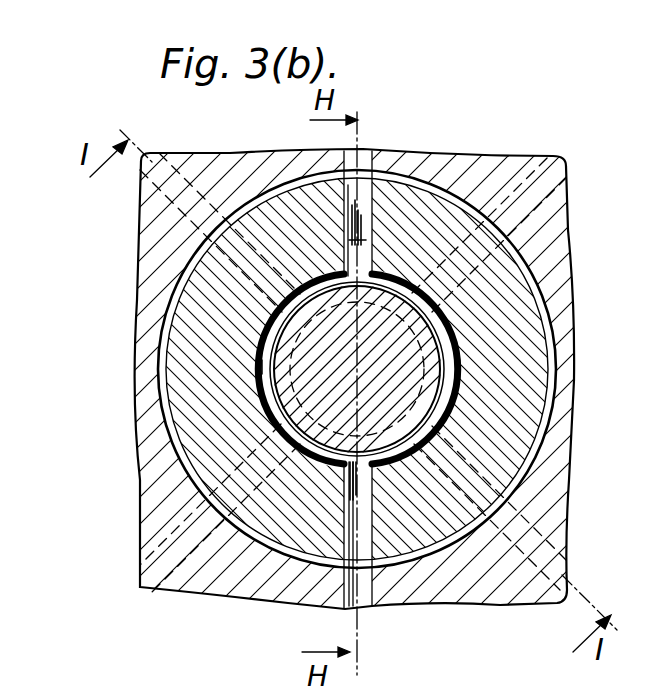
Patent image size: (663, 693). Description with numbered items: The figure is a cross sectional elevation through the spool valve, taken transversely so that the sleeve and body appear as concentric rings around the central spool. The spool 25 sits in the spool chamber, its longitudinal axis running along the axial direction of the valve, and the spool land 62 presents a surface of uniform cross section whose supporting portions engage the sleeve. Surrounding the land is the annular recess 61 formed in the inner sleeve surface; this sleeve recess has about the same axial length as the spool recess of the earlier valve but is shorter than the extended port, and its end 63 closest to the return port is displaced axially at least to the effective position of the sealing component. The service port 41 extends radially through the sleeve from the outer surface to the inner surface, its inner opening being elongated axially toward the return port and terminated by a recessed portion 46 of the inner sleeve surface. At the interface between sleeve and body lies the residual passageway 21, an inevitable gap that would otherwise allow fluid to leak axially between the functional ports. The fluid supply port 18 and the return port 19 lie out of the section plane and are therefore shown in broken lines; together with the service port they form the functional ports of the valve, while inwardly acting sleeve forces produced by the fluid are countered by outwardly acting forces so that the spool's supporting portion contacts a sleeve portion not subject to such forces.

The fluid supply port 18 is at (166, 552).
The return port 19 is at (540, 527).
The residual passageway 21 is at (537, 281).
The spool 25 is at (262, 367).
The service port 41 is at (363, 210).
The recessed portion 46 is at (365, 250).
The annular recess 61 is at (450, 348).
The spool land 62 is at (432, 378).
The end of the sleeve recess 63 is at (267, 335).